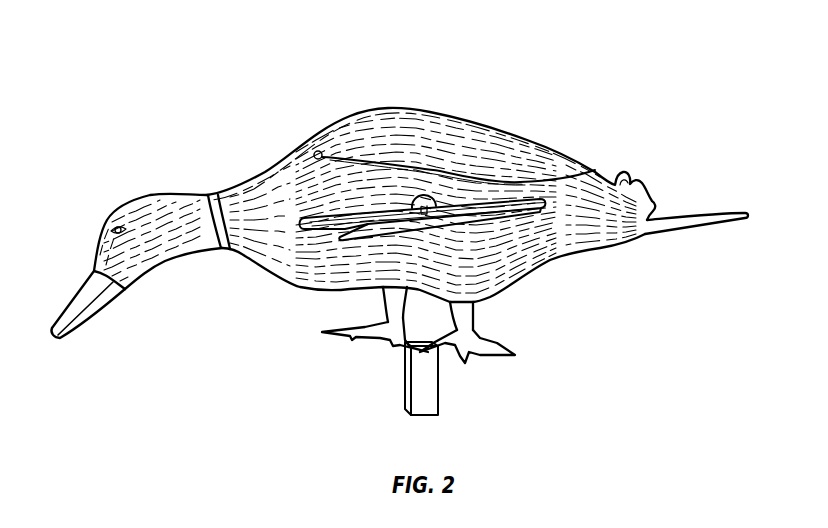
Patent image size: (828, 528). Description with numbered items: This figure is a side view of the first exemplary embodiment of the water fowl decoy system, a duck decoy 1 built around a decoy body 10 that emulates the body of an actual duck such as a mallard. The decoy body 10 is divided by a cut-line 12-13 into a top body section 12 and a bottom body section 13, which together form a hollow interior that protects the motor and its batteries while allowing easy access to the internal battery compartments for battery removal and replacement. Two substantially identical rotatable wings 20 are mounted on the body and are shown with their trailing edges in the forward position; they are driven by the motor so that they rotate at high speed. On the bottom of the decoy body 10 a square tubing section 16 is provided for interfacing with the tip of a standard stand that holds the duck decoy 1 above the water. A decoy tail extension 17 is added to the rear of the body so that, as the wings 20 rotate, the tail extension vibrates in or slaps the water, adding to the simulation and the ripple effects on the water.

The duck decoy 1 is at (278, 67).
The decoy body 10 is at (240, 286).
The top body section 12 is at (533, 137).
The bottom body section 13 is at (560, 256).
The cut-line 12-13 is at (348, 150).
The square tubing section 16 is at (430, 415).
The decoy tail extension 17 is at (708, 224).
The rotatable wings 20 is at (384, 246).